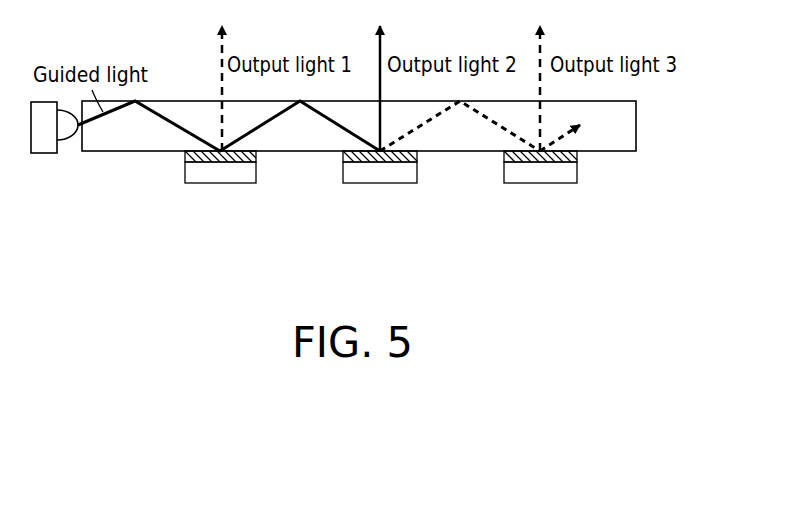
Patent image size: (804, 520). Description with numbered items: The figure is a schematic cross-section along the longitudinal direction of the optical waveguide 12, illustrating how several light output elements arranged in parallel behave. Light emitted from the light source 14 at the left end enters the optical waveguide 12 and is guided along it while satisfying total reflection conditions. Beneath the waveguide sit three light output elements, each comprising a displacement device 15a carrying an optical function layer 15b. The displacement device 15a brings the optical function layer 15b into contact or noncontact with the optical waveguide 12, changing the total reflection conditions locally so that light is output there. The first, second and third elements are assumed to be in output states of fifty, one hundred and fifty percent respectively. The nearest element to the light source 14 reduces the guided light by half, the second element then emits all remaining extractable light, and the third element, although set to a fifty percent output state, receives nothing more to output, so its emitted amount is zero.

The optical waveguide 12 is at (627, 110).
The light source 14 is at (44, 153).
The displacement device 15a is at (209, 197).
The optical function layer 15b is at (238, 162).